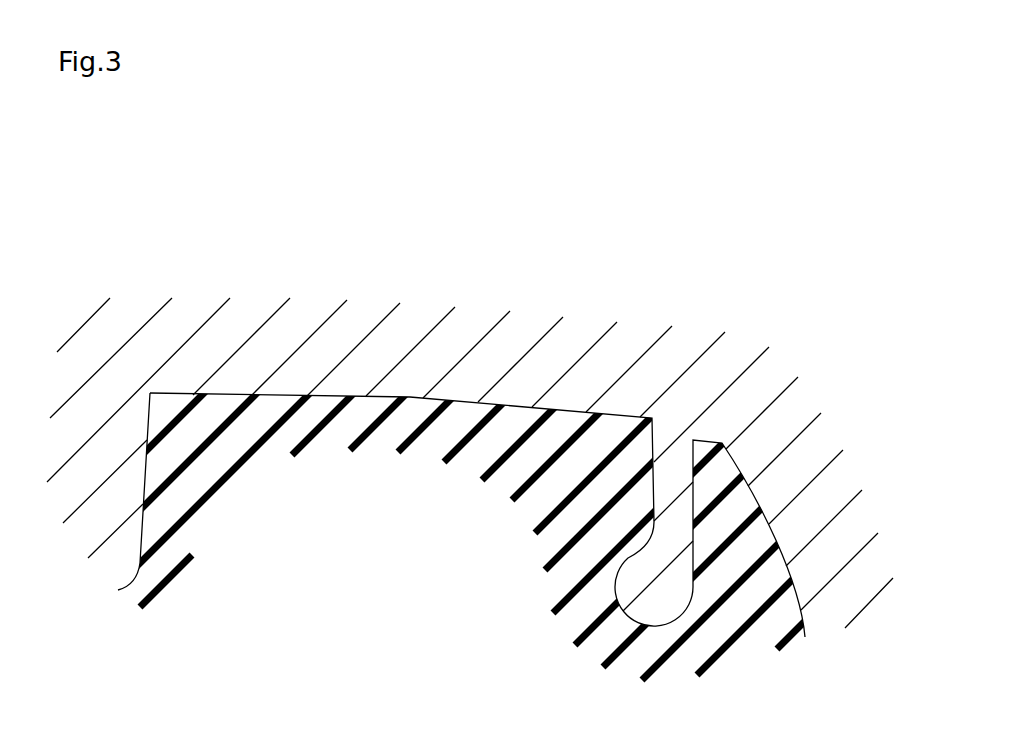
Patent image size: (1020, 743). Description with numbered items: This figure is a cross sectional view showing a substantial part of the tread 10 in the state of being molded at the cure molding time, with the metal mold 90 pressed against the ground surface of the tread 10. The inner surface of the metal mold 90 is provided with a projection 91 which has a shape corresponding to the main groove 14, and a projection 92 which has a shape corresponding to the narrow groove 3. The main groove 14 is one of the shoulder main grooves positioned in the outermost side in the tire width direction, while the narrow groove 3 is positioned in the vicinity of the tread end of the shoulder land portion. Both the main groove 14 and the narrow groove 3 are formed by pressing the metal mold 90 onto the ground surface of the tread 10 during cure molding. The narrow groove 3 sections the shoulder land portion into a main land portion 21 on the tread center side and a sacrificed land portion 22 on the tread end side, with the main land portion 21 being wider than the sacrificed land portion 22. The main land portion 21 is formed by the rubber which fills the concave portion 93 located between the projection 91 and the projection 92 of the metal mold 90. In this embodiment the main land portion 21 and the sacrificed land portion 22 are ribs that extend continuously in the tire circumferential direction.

The narrow groove 3 is at (462, 463).
The metal mold 90 is at (463, 485).
The tread 10 is at (270, 393).
The main groove 14 is at (147, 415).
The main land portion 21 is at (417, 397).
The sacrificed land portion 22 is at (705, 440).
The projection 91 is at (147, 477).
The projection 92 is at (693, 587).
The concave portion 93 is at (476, 404).